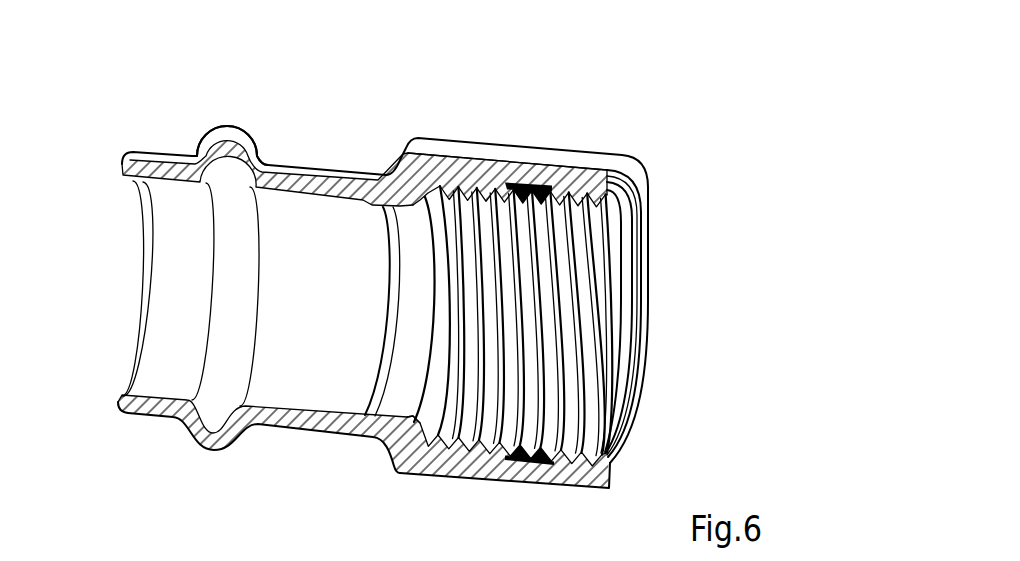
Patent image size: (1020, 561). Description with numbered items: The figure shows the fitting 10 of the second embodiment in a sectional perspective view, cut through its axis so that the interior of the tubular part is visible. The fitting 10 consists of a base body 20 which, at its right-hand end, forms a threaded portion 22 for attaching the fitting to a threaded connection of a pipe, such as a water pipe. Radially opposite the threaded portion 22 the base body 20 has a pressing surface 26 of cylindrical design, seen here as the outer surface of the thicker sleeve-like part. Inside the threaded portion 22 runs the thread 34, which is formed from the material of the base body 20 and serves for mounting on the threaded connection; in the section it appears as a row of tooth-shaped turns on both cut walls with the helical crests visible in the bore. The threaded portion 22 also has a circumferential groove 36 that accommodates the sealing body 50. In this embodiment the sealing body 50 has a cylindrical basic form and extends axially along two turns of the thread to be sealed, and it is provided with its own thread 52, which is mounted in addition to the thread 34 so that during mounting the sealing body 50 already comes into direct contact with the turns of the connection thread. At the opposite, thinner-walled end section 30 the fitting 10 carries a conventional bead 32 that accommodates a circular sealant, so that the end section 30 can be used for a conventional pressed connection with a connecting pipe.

The fitting 10 is at (692, 116).
The base body 20 is at (448, 112).
The threaded portion 22 is at (583, 173).
The pressing surface 26 is at (497, 153).
The end section 30 is at (144, 116).
The bead 32 is at (228, 134).
The thread 34 is at (477, 393).
The circumferential groove 36 is at (538, 462).
The sealing body 50 is at (543, 183).
The thread 52 is at (541, 206).